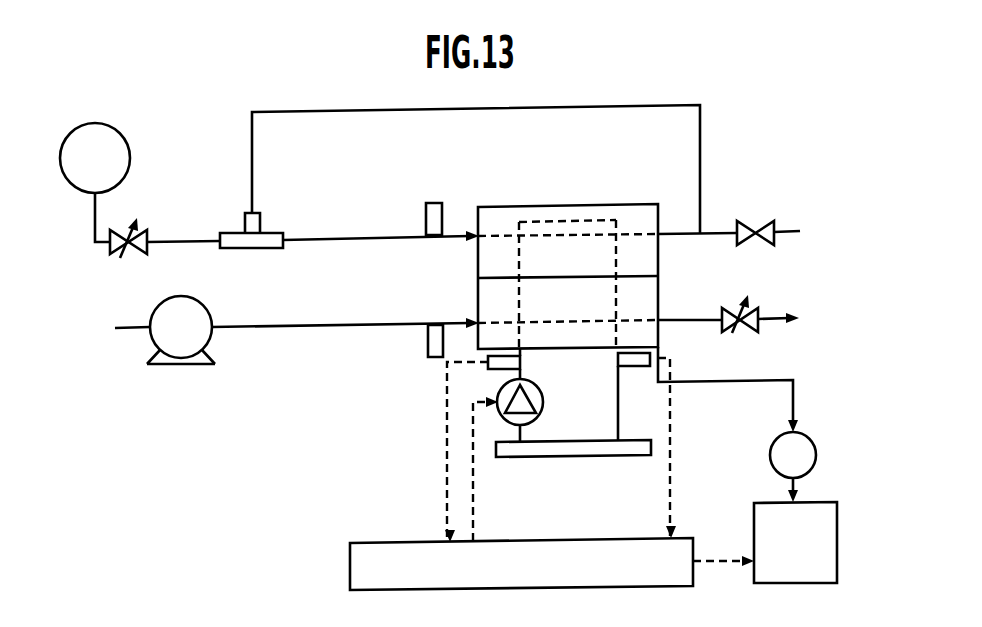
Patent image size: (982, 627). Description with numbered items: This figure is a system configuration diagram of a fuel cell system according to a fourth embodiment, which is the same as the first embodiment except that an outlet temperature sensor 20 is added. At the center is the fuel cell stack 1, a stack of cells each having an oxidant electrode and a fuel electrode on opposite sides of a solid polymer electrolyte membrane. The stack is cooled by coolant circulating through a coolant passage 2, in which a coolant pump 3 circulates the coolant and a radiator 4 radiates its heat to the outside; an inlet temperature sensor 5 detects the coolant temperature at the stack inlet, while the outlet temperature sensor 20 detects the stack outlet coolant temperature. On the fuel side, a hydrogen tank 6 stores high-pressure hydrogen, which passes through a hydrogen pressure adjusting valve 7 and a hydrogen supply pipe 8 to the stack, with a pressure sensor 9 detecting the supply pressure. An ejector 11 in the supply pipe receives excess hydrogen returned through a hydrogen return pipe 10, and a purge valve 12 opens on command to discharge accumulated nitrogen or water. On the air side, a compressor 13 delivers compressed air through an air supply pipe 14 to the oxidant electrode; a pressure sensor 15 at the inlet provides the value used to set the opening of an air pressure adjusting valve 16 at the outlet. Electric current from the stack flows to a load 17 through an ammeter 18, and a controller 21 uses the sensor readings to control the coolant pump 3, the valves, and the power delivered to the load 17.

The fuel cell stack 1 is at (505, 206).
The coolant passage 2 is at (620, 430).
The coolant pump 3 is at (544, 403).
The radiator 4 is at (595, 458).
The inlet temperature sensor 5 is at (488, 362).
The hydrogen tank 6 is at (130, 157).
The hydrogen pressure adjusting valve 7 is at (150, 232).
The hydrogen supply pipe 8 is at (355, 235).
The pressure sensor 9 is at (434, 203).
The hydrogen return pipe 10 is at (700, 112).
The ejector 11 is at (262, 220).
The purge valve 12 is at (758, 221).
The compressor 13 is at (183, 366).
The air supply pipe 14 is at (320, 330).
The pressure sensor 15 is at (428, 347).
The air pressure adjusting valve 16 is at (733, 306).
The load 17 is at (840, 540).
The ammeter 18 is at (816, 455).
The outlet temperature sensor 20 is at (636, 368).
The controller 21 is at (350, 567).